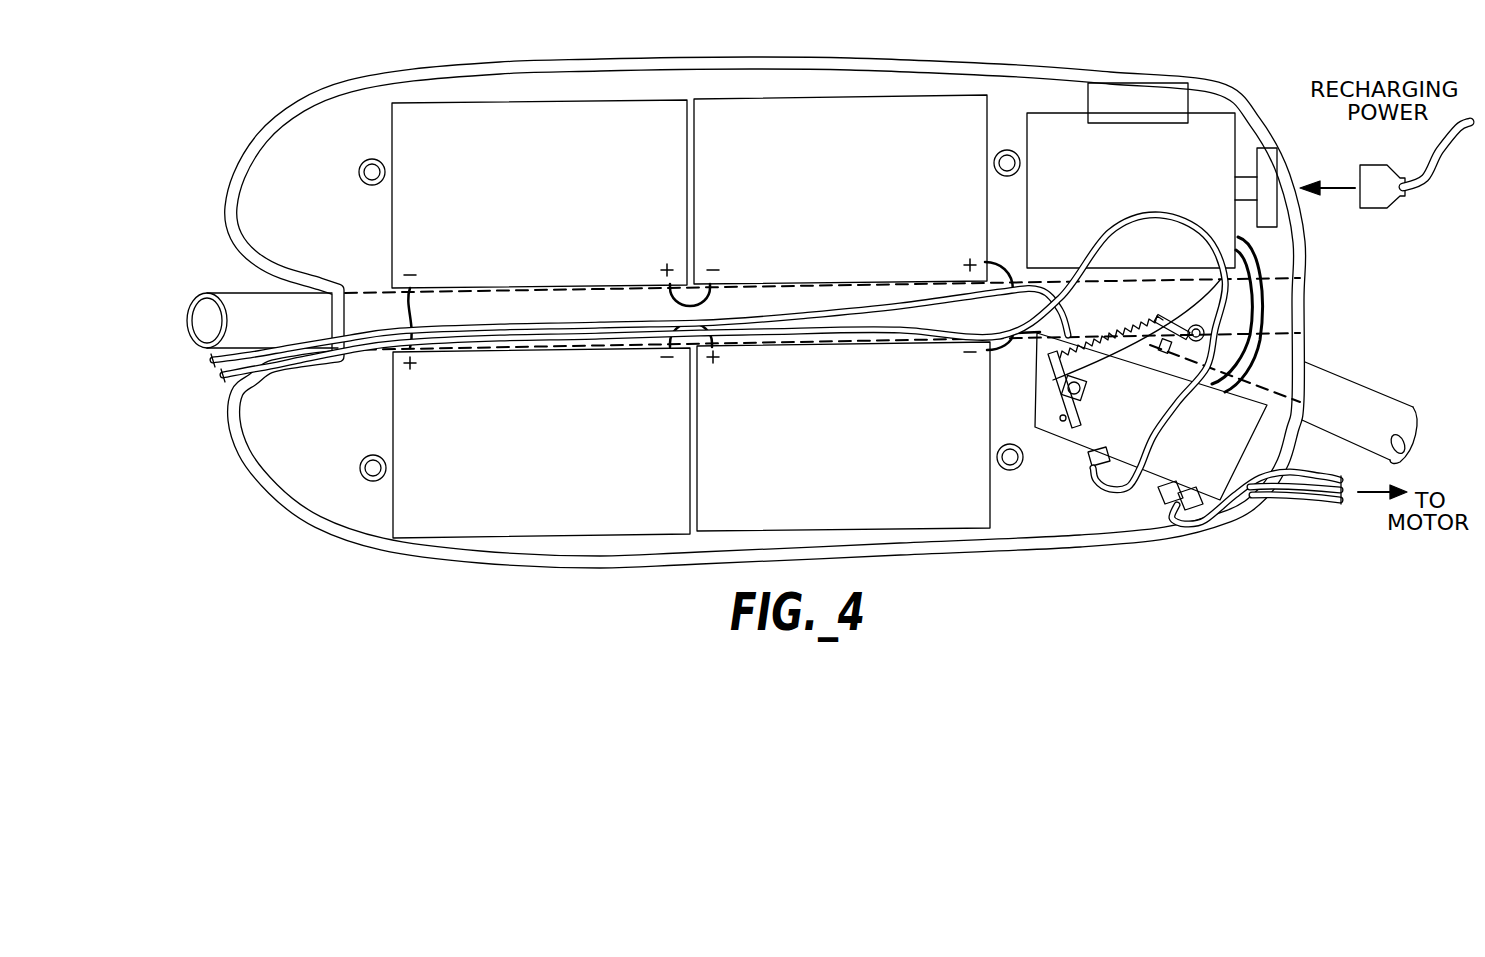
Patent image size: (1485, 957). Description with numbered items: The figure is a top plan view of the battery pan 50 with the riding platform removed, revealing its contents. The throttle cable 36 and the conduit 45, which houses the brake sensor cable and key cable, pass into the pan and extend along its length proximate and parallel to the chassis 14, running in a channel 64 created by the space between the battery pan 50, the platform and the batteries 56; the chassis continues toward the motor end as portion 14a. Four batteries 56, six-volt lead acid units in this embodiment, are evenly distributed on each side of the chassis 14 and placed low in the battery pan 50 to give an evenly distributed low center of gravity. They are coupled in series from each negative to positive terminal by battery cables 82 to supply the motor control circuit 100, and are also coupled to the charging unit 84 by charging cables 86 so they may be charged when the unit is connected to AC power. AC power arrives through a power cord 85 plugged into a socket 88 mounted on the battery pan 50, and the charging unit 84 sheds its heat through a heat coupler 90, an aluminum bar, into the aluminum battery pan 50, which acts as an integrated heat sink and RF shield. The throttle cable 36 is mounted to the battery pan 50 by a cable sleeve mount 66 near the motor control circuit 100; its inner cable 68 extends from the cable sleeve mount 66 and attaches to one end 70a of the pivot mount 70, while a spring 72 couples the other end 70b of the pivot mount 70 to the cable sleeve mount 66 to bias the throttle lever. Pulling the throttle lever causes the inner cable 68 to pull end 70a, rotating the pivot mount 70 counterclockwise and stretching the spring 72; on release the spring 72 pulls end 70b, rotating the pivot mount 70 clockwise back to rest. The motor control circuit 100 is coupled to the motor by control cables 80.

The chassis 14 is at (250, 306).
The handle tube motor end 14a is at (1347, 390).
The throttle cable 36 is at (905, 317).
The conduit 45 is at (233, 385).
The battery pan 50 is at (487, 577).
The batteries 56 is at (558, 202).
The channel 64 is at (485, 307).
The cable sleeve mount 66 is at (1300, 347).
The inner cable 68 is at (1150, 470).
The pivot mount 70 is at (1053, 382).
The end of pivot mount 70a is at (1078, 428).
The other end of pivot mount 70b is at (1036, 430).
The spring 72 is at (1090, 345).
The control cables 80 is at (1330, 490).
The battery cables 82 is at (1030, 275).
The charging unit 84 is at (1152, 187).
The power cord 85 is at (1413, 187).
The charging cables 86 is at (1258, 308).
The socket 88 is at (1275, 187).
The heat coupler 90 is at (1152, 115).
The motor control circuit 100 is at (1232, 449).